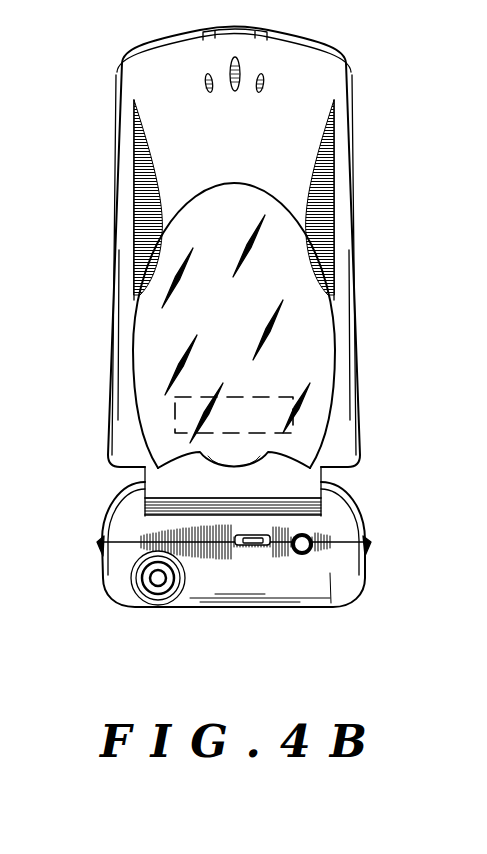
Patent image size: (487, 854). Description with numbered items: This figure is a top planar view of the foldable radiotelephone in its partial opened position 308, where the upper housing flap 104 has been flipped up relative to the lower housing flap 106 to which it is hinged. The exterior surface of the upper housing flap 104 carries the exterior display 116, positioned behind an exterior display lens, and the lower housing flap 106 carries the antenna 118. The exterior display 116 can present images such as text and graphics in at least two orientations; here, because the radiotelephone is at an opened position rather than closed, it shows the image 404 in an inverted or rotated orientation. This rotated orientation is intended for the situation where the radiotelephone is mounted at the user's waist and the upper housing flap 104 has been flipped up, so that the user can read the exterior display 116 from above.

The partial opened position 308 is at (400, 221).
The upper housing flap 104 is at (112, 312).
The exterior display 116 is at (175, 403).
The image 404 is at (272, 413).
The lower housing flap 106 is at (345, 588).
The antenna 118 is at (150, 578).